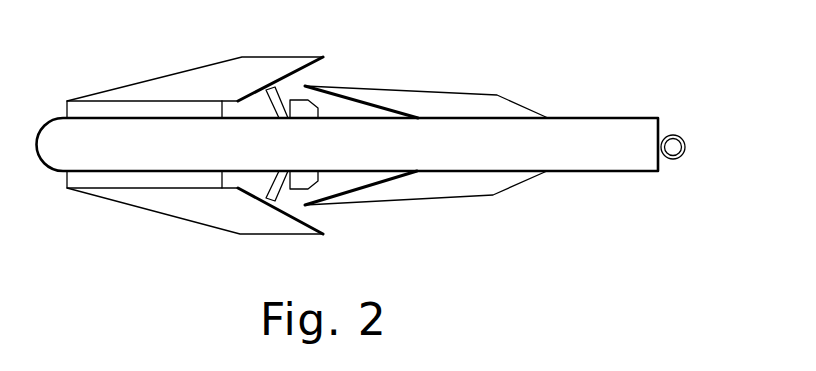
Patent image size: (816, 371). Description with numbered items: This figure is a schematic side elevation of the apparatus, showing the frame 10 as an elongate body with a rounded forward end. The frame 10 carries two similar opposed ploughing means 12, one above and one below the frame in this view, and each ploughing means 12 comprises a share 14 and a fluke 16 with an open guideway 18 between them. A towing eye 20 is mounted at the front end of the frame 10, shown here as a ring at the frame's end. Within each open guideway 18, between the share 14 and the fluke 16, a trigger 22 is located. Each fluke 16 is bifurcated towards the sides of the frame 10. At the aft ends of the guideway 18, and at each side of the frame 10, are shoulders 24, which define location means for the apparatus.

The frame 10 is at (397, 160).
The ploughing means 12 is at (327, 42).
The share 14 is at (458, 105).
The fluke 16 is at (175, 82).
The open guideway 18 is at (305, 78).
The towing eye 20 is at (673, 159).
The trigger 22 is at (276, 96).
The shoulder 24 is at (227, 114).